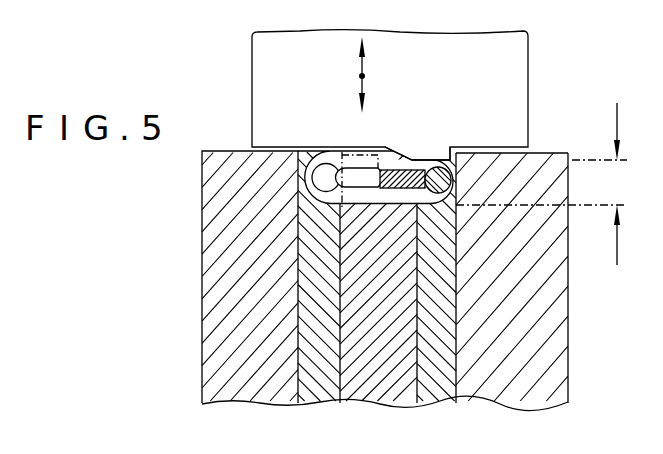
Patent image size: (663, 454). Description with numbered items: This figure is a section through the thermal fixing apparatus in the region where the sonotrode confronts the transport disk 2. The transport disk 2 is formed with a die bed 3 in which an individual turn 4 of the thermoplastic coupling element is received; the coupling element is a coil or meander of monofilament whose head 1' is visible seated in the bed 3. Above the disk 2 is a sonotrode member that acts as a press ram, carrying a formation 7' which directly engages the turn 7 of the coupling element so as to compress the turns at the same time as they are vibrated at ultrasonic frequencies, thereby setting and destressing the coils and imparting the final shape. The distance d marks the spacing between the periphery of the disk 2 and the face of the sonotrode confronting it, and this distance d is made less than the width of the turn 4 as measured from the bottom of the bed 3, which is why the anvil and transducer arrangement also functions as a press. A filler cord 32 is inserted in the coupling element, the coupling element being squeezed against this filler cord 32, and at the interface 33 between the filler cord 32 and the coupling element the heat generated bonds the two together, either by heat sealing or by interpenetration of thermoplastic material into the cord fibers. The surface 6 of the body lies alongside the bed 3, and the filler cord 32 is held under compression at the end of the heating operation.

The transport disk 2 is at (576, 372).
The die bed 3 is at (303, 200).
The turn of the coupling element 7 is at (407, 95).
The formation 7' is at (426, 130).
The head 1' is at (310, 153).
The turn 4 is at (333, 167).
The filler cord 32 is at (400, 178).
The interface 33 is at (390, 172).
The top surface of base 6 is at (542, 141).
The distance d is at (541, 184).